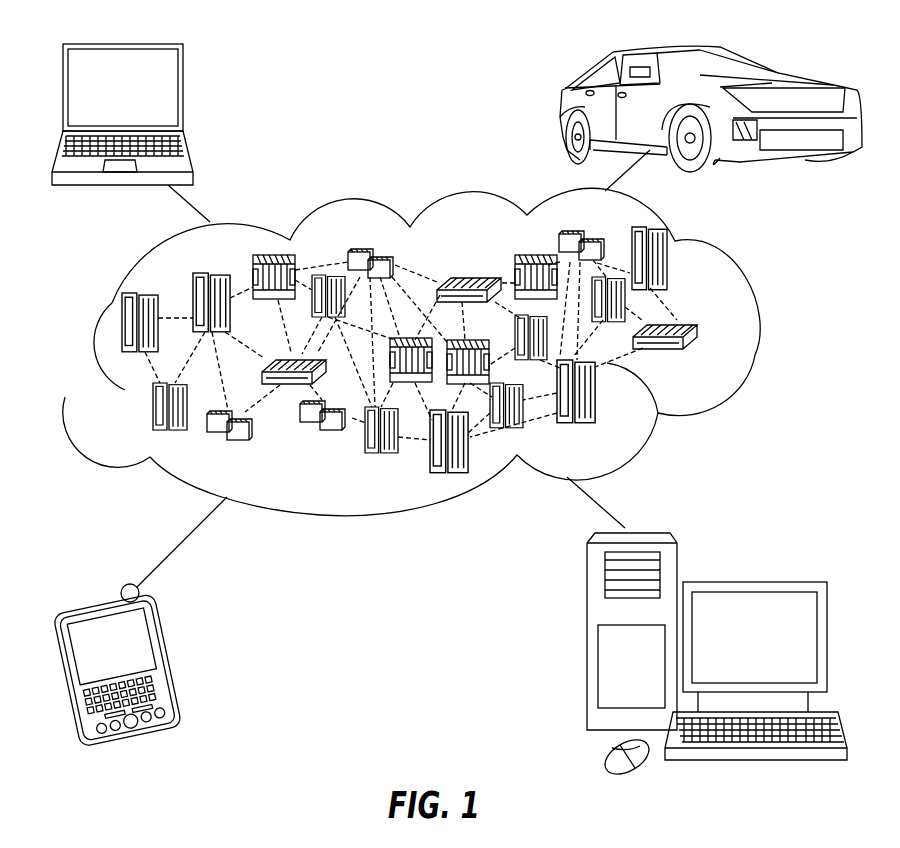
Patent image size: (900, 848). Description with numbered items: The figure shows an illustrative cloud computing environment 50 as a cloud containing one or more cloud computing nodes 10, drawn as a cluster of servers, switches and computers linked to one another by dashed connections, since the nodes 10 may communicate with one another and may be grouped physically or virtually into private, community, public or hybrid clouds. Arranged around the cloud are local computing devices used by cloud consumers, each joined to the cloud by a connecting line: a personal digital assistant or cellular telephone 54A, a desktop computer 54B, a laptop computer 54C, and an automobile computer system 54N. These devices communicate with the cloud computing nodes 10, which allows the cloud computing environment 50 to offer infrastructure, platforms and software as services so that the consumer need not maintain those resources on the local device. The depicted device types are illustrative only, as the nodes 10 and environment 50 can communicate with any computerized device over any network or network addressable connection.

The cloud computing nodes 10 is at (705, 358).
The cloud computing environment 50 is at (752, 337).
The personal digital assistant (PDA) or cellular telephone 54A is at (173, 663).
The desktop computer 54B is at (752, 582).
The laptop computer 54C is at (183, 90).
The automobile computer system 54N is at (560, 112).